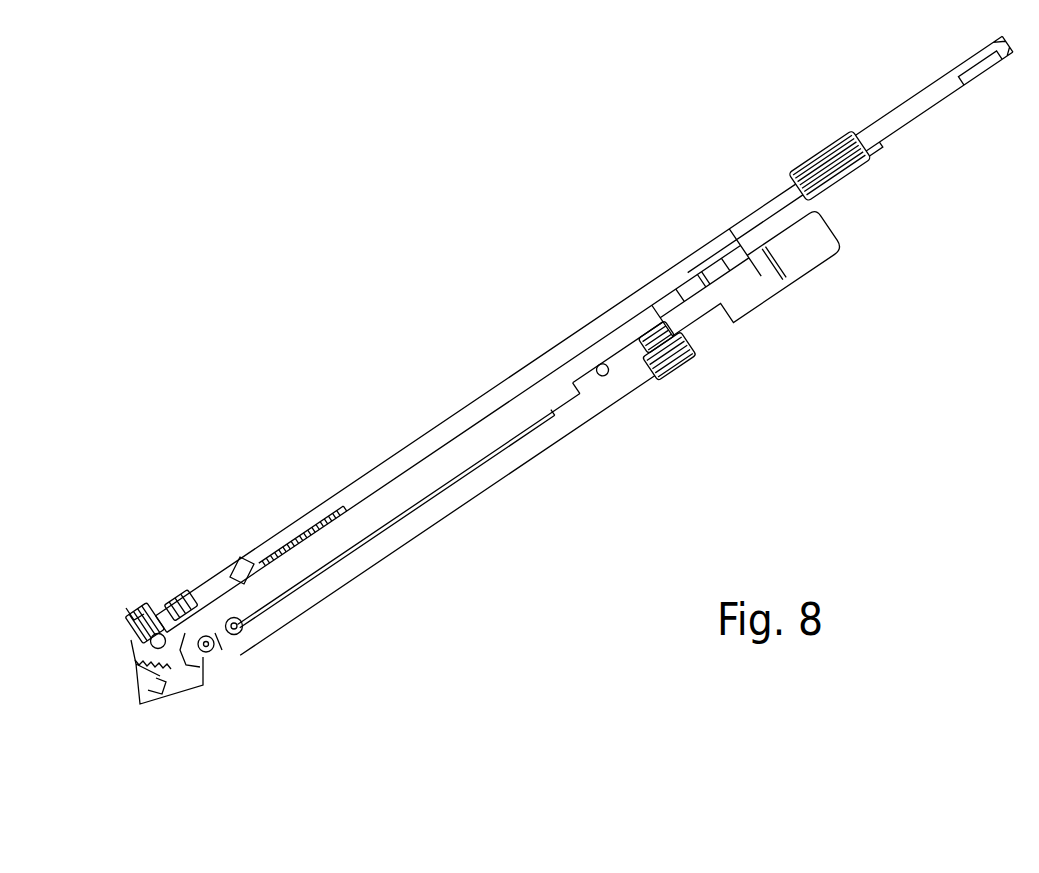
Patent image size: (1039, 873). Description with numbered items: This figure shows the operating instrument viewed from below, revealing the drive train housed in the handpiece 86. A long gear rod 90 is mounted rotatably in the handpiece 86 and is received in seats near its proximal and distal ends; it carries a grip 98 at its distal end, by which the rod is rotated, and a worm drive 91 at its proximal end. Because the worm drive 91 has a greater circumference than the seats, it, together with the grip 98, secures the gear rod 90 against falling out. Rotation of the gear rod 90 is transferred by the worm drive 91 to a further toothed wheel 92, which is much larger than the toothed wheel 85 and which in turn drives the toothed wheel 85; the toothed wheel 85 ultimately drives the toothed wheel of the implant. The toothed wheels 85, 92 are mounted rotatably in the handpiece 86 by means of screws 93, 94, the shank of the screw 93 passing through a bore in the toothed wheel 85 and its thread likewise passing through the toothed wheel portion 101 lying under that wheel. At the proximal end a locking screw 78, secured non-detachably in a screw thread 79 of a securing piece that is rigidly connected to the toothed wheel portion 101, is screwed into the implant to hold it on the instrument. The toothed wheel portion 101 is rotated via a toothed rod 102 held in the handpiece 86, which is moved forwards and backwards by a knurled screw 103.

The locking screw 78 is at (150, 603).
The screw thread 79 is at (136, 606).
The toothed wheel 85 is at (150, 643).
The handpiece 86 is at (806, 258).
The gear rod 90 is at (487, 398).
The worm drive 91 is at (183, 597).
The toothed wheel 92 is at (199, 662).
The screw 93 is at (140, 636).
The screw 94 is at (241, 645).
The grip 98 is at (820, 150).
The toothed wheel portion 101 is at (134, 676).
The toothed rod 102 is at (160, 700).
The knurled screw 103 is at (683, 378).